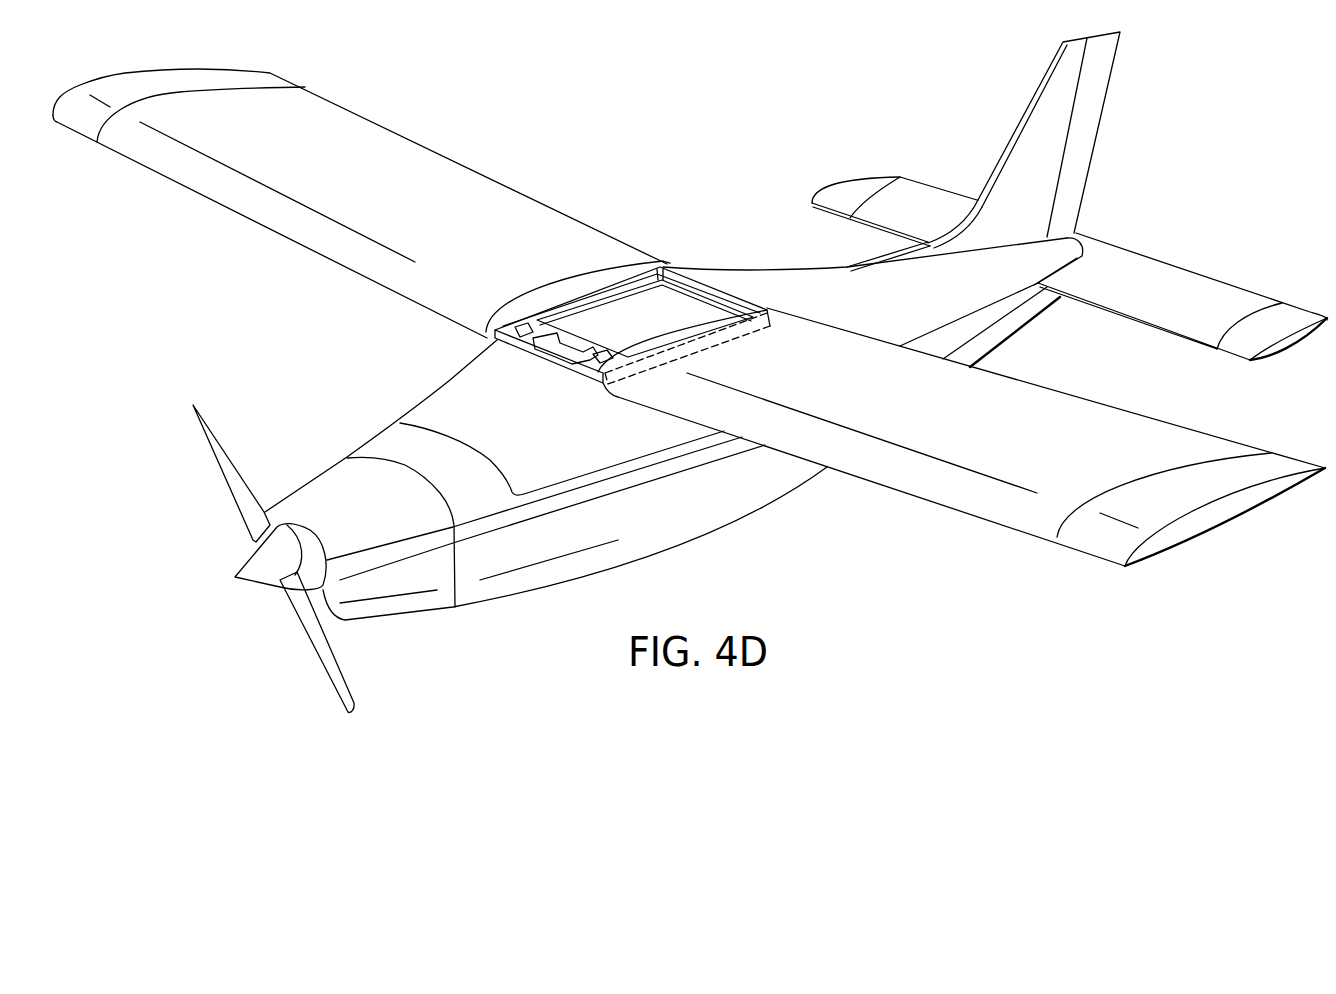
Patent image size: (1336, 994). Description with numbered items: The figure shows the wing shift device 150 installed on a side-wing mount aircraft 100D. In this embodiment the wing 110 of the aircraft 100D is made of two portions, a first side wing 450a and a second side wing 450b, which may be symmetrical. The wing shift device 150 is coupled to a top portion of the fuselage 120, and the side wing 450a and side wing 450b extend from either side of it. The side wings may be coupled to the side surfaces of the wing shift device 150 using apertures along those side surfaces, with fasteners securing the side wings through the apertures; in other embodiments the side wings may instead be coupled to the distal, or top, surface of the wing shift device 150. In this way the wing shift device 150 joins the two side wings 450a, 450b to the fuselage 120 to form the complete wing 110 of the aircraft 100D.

The side-wing mount aircraft 100D is at (767, 118).
The wing 110 is at (1258, 540).
The fuselage 120 is at (775, 506).
The wing shift device 150 is at (684, 267).
The first side wing 450a is at (405, 138).
The second side wing 450b is at (1123, 408).